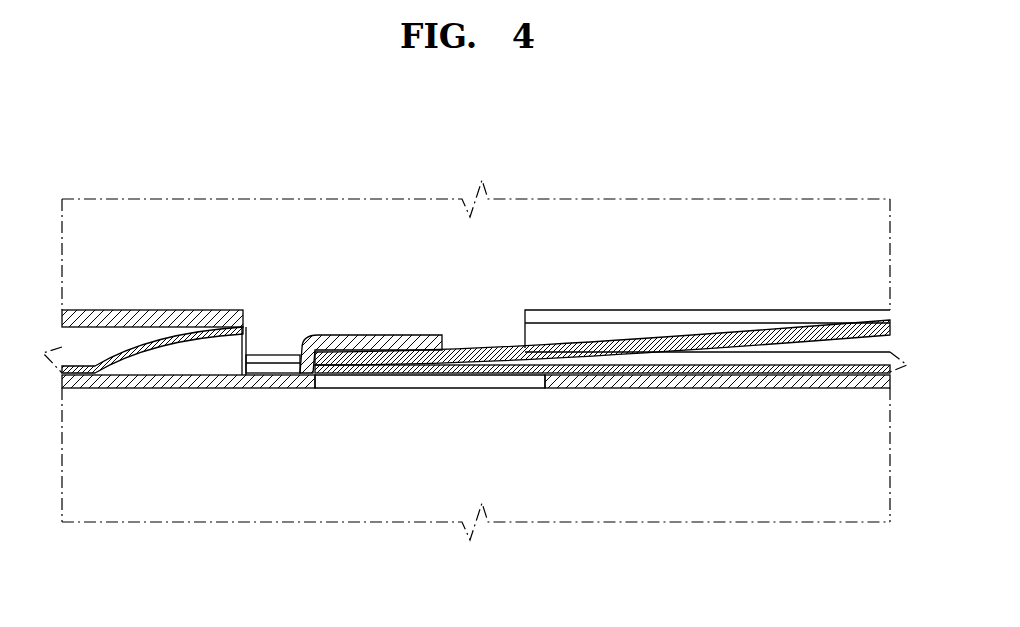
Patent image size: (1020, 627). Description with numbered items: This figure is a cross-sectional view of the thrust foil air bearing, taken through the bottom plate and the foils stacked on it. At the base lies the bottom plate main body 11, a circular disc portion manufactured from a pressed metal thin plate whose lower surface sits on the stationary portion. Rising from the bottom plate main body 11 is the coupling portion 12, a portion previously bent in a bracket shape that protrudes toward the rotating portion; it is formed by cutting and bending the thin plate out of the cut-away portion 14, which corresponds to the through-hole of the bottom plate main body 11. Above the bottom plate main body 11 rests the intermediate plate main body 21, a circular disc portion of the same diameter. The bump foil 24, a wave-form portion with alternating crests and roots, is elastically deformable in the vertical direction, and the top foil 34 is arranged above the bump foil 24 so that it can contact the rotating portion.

The bottom plate main body 11 is at (275, 386).
The coupling portion 12 is at (377, 340).
The cut-away portion 14 is at (537, 387).
The intermediate plate main body 21 is at (623, 368).
The bump foil 24 is at (150, 338).
The top foil 34 is at (190, 318).